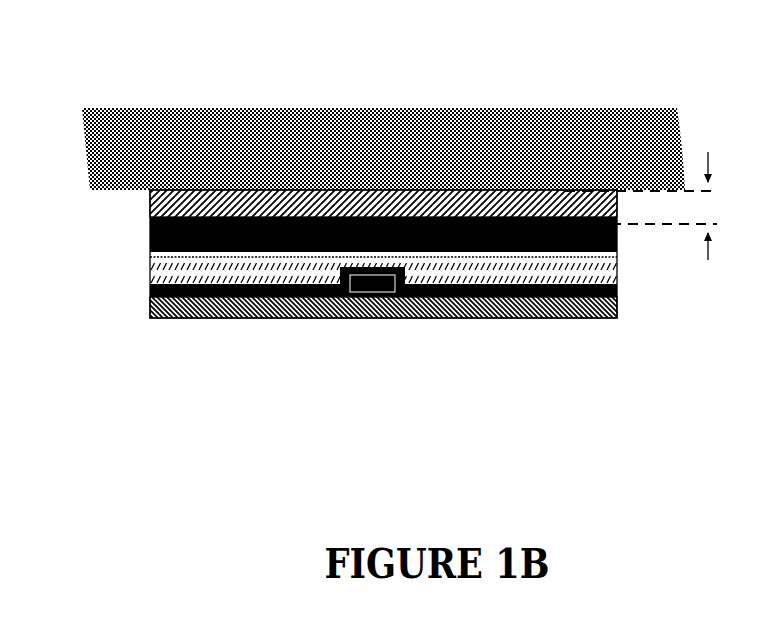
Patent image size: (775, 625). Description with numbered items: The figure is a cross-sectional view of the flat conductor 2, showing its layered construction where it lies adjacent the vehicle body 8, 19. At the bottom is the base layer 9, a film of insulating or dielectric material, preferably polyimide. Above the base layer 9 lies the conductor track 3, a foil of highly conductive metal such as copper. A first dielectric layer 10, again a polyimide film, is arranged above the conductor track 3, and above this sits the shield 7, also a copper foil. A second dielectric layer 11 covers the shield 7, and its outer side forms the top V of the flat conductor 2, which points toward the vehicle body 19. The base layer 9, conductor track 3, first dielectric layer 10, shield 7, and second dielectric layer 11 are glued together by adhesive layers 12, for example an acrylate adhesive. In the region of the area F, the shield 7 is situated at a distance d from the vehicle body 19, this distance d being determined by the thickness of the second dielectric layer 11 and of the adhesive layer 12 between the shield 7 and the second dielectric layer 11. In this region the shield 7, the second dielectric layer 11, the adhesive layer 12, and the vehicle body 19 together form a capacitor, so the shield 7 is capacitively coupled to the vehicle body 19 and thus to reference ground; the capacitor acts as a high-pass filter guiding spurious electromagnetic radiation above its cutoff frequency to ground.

The flat conductor 2 is at (618, 317).
The conductor track 3 is at (368, 280).
The shield 7 is at (427, 237).
The object 8 is at (398, 117).
The vehicle body 19 is at (655, 138).
The base layer 9 is at (170, 307).
The first dielectric layer 10 is at (465, 268).
The second dielectric layer 11 is at (340, 206).
The adhesive layer 12 is at (530, 216).
The top V is at (205, 181).
The area F is at (164, 197).
The distance d is at (658, 206).